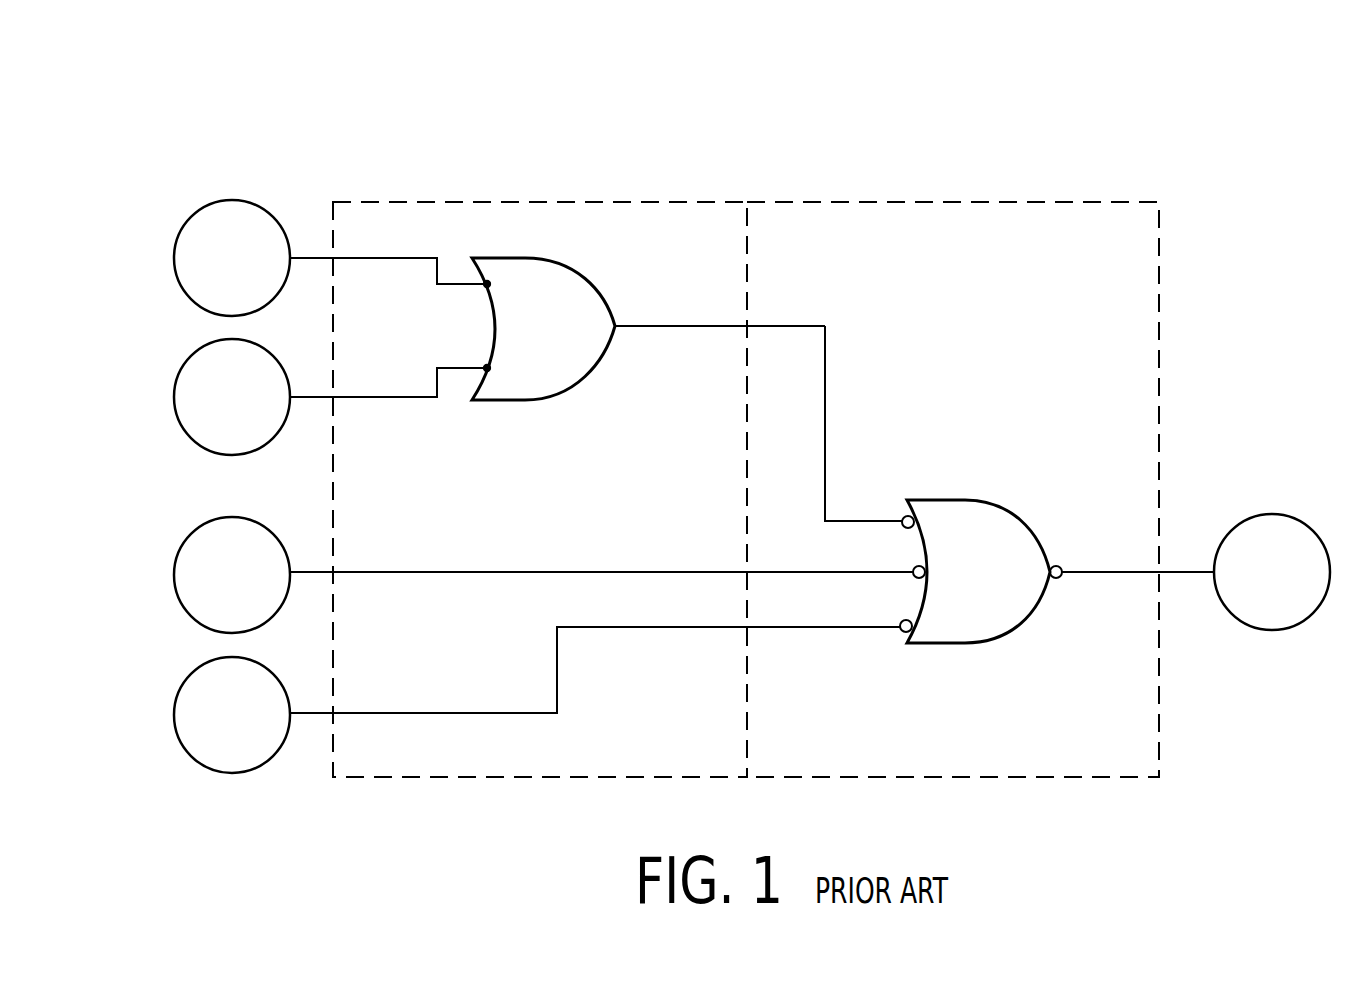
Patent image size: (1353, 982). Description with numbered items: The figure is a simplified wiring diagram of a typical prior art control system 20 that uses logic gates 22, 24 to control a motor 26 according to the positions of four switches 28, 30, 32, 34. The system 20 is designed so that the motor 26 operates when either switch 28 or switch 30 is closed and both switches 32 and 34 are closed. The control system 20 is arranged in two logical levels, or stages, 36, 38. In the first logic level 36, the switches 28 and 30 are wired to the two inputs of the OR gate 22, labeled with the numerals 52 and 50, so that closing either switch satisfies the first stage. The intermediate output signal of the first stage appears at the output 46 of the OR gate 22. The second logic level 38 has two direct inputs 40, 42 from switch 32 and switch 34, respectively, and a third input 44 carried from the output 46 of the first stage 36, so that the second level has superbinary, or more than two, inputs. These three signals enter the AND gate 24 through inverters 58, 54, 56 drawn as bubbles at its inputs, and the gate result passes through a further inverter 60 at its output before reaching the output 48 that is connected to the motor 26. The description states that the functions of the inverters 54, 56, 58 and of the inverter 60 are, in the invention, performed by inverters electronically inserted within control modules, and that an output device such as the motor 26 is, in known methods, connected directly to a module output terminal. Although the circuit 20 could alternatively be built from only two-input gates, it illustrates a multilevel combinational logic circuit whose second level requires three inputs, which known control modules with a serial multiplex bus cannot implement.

The control system 20 is at (705, 75).
The OR gate 22 is at (525, 297).
The AND gate 24 is at (975, 550).
The motor 26 is at (1270, 513).
The switch 28 is at (240, 200).
The switch 30 is at (230, 340).
The switch 32 is at (230, 518).
The switch 34 is at (230, 657).
The first logic level 36 is at (497, 220).
The second logic level 38 is at (857, 218).
The direct input 40 is at (825, 572).
The direct input 42 is at (817, 627).
The input 44 is at (838, 520).
The output 46 is at (620, 323).
The output 48 is at (1090, 570).
The second OR gate input 50 is at (486, 370).
The first OR gate input 52 is at (485, 282).
The inverter 54 is at (912, 568).
The inverter 56 is at (903, 632).
The inverter 58 is at (903, 517).
The inverter 60 is at (1056, 578).